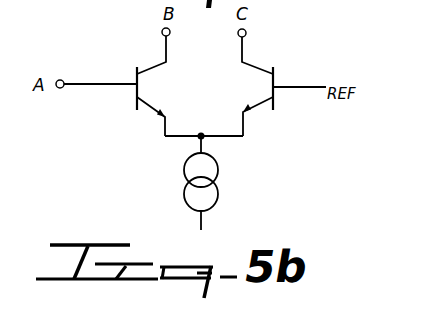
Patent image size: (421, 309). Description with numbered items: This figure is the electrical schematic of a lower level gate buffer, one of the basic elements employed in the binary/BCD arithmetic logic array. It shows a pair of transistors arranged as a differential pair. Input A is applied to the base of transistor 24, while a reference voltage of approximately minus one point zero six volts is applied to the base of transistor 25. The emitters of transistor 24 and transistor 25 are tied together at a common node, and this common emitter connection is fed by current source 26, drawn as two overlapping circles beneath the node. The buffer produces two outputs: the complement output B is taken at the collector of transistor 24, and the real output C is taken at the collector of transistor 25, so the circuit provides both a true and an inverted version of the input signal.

The transistor 24 is at (148, 100).
The transistor 25 is at (262, 96).
The current source 26 is at (217, 183).